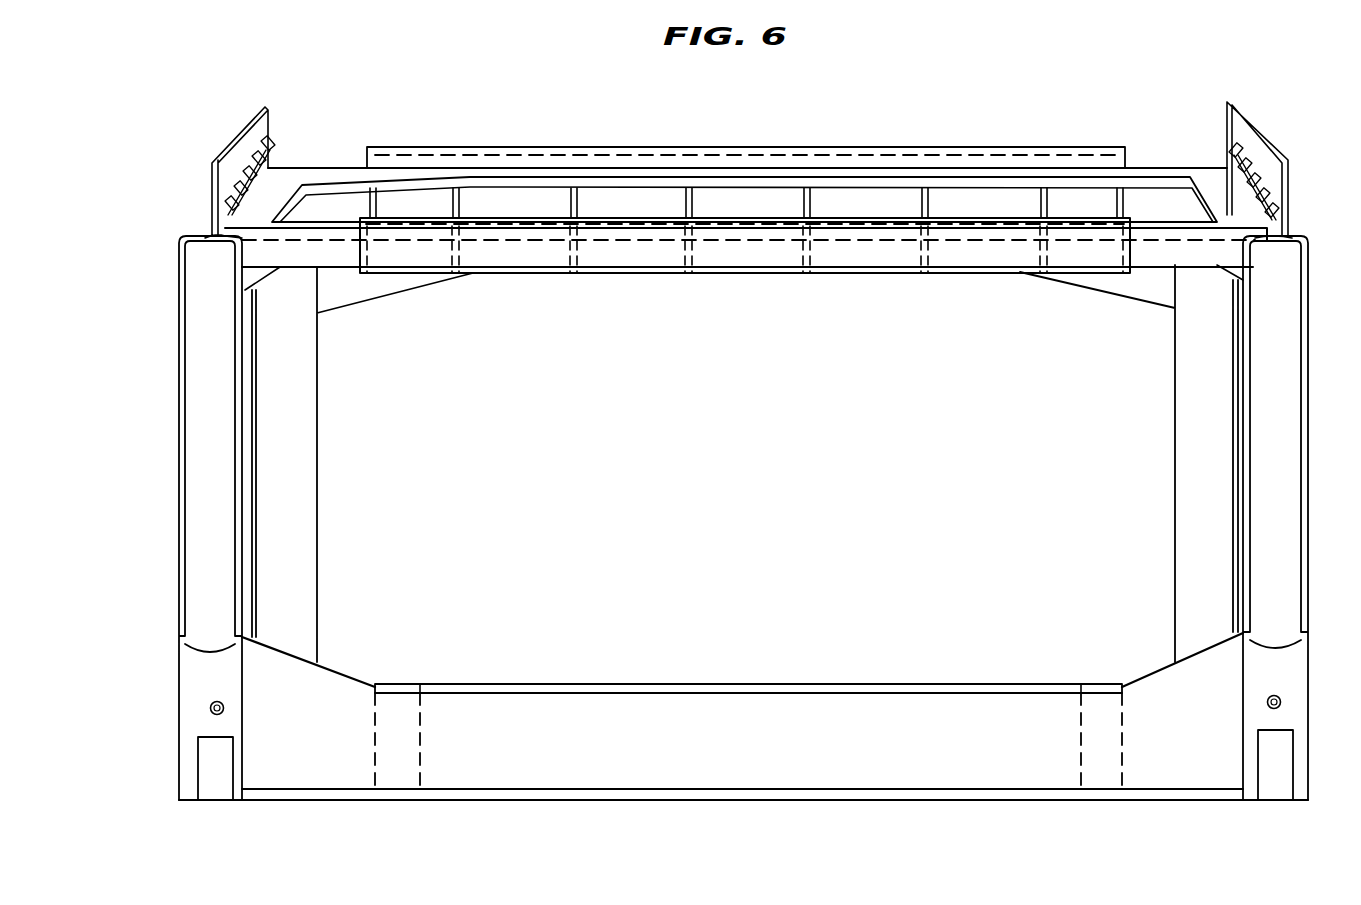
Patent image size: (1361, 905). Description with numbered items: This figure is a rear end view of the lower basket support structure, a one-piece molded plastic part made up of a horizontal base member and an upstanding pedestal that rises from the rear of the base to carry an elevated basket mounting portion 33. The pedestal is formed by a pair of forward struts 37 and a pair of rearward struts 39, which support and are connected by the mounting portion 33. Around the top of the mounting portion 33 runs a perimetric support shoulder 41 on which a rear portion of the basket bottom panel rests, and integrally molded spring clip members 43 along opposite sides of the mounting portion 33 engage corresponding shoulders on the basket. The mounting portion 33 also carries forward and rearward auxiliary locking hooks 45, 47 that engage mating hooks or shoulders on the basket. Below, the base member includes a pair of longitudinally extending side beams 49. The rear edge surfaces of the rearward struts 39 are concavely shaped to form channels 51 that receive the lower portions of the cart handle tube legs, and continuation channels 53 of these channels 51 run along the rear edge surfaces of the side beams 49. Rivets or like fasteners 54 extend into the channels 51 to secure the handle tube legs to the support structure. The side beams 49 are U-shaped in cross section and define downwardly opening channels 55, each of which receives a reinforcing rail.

The basket mounting portion 33 is at (953, 133).
The forward struts 37 is at (318, 483).
The rearward struts 39 is at (181, 362).
The perimetric support shoulder 41 is at (1160, 172).
The spring clip members 43 is at (240, 134).
The forward auxiliary locking hook 45 is at (803, 147).
The rearward auxiliary locking hook 47 is at (846, 262).
The side beams 49 is at (350, 681).
The channels 51 is at (805, 684).
The continuation channels 53 is at (227, 686).
The fasteners 54 is at (208, 708).
The downwardly opening channels 55 is at (210, 760).